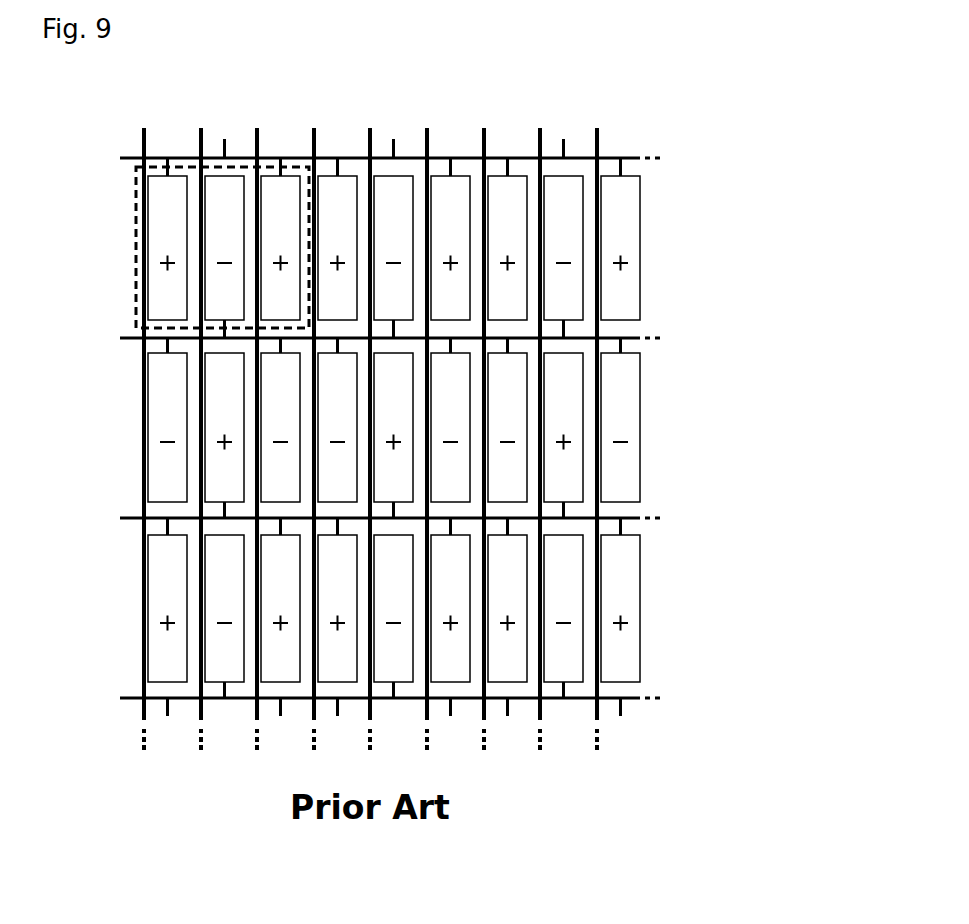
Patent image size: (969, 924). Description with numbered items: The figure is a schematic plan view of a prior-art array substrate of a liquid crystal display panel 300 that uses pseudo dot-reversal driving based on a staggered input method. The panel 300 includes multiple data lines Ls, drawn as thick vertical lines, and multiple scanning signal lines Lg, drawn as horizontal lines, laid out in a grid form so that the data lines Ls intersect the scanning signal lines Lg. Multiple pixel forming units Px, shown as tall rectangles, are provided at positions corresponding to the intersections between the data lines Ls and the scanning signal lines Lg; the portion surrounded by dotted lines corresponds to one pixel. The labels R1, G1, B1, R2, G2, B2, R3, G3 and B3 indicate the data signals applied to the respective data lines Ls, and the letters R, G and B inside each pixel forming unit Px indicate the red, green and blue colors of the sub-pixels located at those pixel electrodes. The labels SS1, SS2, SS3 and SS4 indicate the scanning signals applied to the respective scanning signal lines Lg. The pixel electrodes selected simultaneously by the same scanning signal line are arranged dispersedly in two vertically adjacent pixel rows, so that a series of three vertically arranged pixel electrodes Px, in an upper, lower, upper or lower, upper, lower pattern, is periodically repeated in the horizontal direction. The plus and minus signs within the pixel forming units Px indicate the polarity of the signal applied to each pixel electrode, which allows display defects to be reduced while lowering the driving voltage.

The liquid crystal display panel 300 is at (765, 93).
The data lines Ls is at (143, 135).
The scanning signal lines Lg is at (135, 159).
The pixel forming units Px is at (162, 298).
The scanning signal SS1 is at (361, 157).
The scanning signal SS2 is at (361, 337).
The scanning signal SS3 is at (361, 517).
The scanning signal SS4 is at (361, 697).
The data signal R1 is at (143, 421).
The data signal G1 is at (201, 421).
The data signal B1 is at (256, 421).
The data signal R2 is at (313, 421).
The data signal G2 is at (370, 421).
The data signal B2 is at (426, 421).
The data signal R3 is at (483, 421).
The data signal G3 is at (540, 421).
The data signal B3 is at (596, 421).